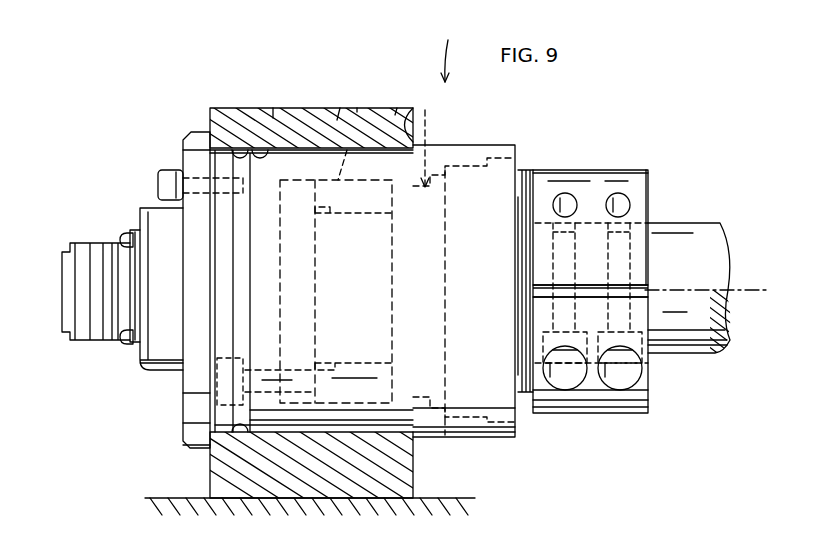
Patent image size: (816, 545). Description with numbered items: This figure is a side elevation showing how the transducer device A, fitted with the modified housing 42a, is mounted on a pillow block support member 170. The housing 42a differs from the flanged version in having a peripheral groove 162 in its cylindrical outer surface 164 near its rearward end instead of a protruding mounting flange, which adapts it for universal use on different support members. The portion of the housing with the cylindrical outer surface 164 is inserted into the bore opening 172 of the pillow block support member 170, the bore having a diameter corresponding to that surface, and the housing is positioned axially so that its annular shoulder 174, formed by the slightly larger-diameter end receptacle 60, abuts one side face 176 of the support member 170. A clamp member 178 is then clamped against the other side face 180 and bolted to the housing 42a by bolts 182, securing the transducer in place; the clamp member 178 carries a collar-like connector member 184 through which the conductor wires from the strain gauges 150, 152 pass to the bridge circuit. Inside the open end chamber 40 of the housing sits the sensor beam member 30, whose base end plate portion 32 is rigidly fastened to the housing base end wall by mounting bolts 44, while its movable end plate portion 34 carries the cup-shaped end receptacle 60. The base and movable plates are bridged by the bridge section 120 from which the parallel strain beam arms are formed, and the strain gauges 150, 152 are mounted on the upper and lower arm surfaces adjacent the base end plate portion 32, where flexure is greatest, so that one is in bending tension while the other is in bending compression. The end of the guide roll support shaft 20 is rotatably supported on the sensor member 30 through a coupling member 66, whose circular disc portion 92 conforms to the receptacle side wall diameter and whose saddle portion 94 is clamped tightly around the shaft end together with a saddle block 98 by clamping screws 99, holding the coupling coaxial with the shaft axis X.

The guide roll support shaft 20 is at (687, 235).
The sensor beam member 30 is at (426, 142).
The base end plate portion 32 is at (310, 262).
The movable end plate portion 34 is at (392, 275).
The open end chamber 40 is at (357, 115).
The modified housing 42a is at (347, 150).
The mounting bolts 44 is at (290, 370).
The cup-shaped end receptacle 60 is at (470, 168).
The coupling member 66 is at (582, 415).
The circular disc portion 92 is at (525, 168).
The saddle portion 94 is at (627, 403).
The saddle block 98 is at (598, 172).
The clamping screws 99 is at (567, 350).
The bridge section 120 is at (385, 252).
The strain gauge 150 is at (318, 213).
The strain gauge 152 is at (323, 370).
The peripheral groove 162 is at (242, 322).
The cylindrical outer surface 164 is at (337, 120).
The pillow block support member 170 is at (310, 105).
The bore opening 172 is at (273, 118).
The annular shoulder 174 is at (395, 115).
The side face 176 is at (413, 467).
The clamp member 178 is at (197, 148).
The side face 180 is at (207, 130).
The bolts 182 is at (165, 180).
The connector member 184 is at (165, 358).
The force sensing means A is at (449, 50).
The axis of shaft X is at (748, 288).